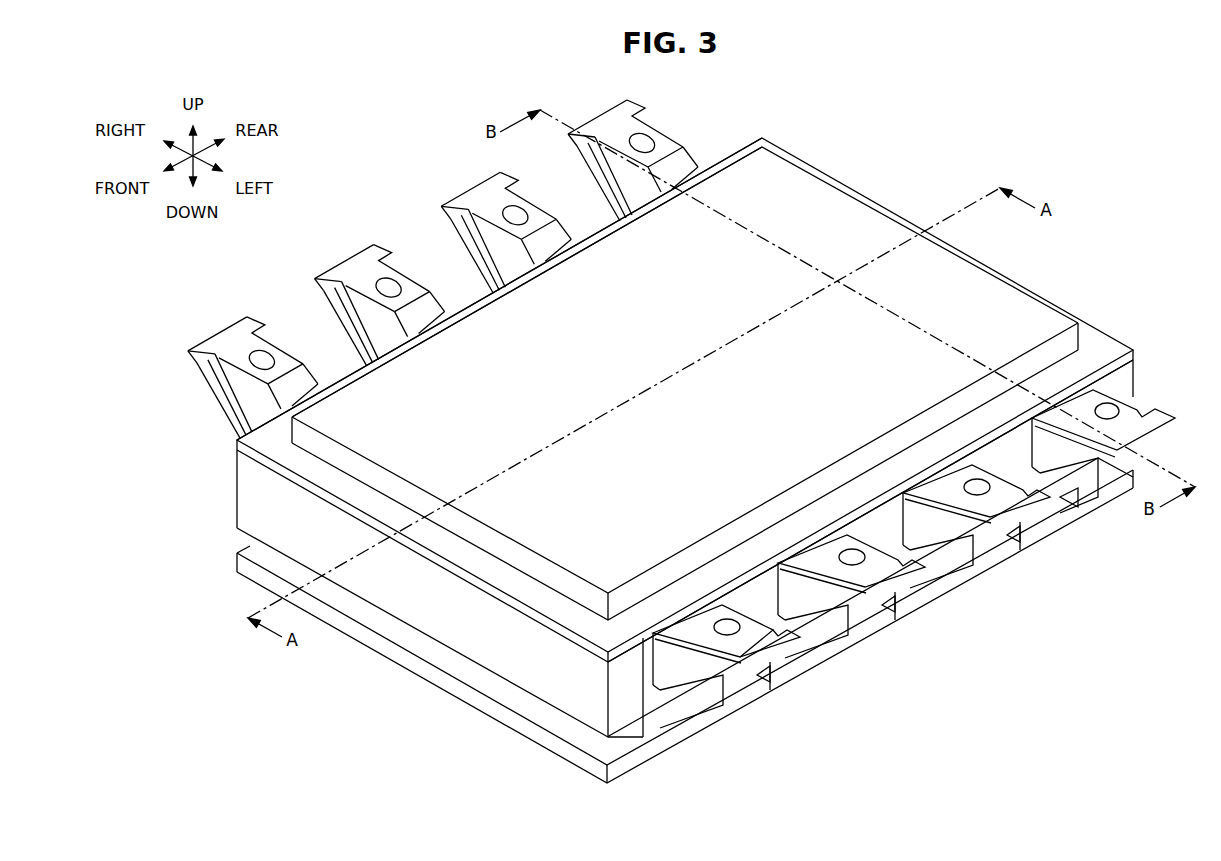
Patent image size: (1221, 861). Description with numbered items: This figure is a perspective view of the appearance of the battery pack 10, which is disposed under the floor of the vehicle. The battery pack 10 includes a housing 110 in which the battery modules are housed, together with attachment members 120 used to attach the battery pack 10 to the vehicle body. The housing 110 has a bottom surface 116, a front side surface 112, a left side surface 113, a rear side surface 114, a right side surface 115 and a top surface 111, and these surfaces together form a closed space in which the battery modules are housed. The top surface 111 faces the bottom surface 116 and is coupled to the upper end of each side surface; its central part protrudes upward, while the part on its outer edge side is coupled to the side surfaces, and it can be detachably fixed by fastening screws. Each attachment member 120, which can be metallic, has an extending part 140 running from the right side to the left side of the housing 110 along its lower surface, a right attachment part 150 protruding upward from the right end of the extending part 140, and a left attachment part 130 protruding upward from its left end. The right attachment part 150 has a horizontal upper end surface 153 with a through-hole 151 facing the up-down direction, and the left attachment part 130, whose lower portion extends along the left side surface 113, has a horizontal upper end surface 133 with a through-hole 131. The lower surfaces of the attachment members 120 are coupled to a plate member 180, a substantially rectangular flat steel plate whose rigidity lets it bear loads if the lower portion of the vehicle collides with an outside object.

The battery pack 10 is at (878, 112).
The housing 110 is at (684, 455).
The top surface 111 is at (803, 172).
The front side surface 112 is at (247, 497).
The left side surface 113 is at (921, 598).
The rear side surface 114 is at (1122, 387).
The right side surface 115 is at (732, 157).
The bottom surface 116 is at (648, 742).
The attachment member 120 is at (768, 677).
The left attachment part 130 is at (851, 616).
The through-hole 131 is at (738, 635).
The upper end surface 133 is at (808, 643).
The extending part 140 is at (597, 763).
The right attachment part 150 is at (419, 269).
The through-hole 151 is at (263, 358).
The upper end surface 153 is at (253, 346).
The plate member 180 is at (1007, 547).